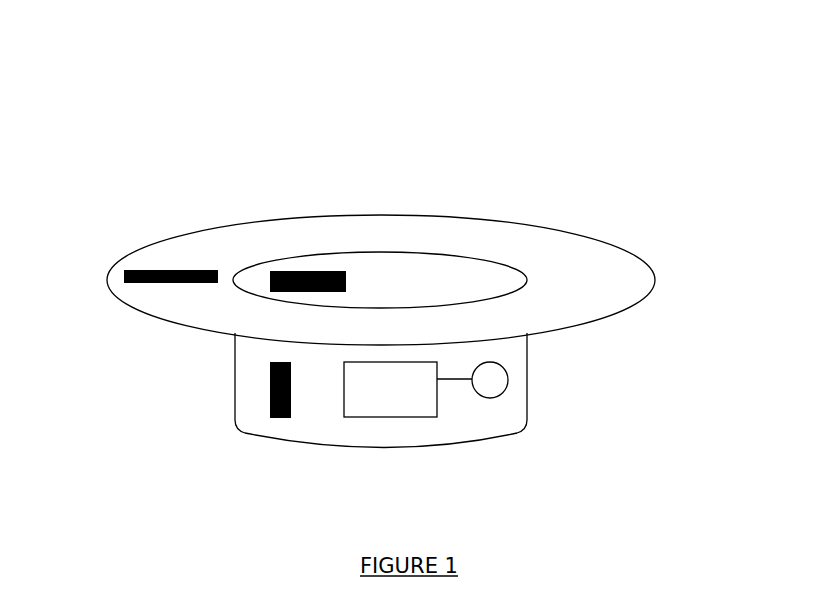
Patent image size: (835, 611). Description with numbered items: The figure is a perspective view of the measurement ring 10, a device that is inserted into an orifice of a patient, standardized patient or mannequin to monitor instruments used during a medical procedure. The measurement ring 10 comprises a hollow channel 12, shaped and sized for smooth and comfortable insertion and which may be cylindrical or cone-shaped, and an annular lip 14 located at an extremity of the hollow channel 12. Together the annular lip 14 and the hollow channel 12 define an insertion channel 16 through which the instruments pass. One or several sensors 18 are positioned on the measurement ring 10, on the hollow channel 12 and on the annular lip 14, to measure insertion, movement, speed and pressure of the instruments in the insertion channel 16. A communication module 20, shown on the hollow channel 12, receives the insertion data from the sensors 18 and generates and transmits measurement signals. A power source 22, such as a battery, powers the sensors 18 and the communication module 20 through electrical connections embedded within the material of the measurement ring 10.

The measurement ring 10 is at (621, 168).
The hollow channel 12 is at (527, 398).
The annular lip 14 is at (655, 272).
The insertion channel 16 is at (378, 186).
The sensors 18 is at (285, 292).
The communication module 20 is at (344, 398).
The power source 22 is at (496, 398).